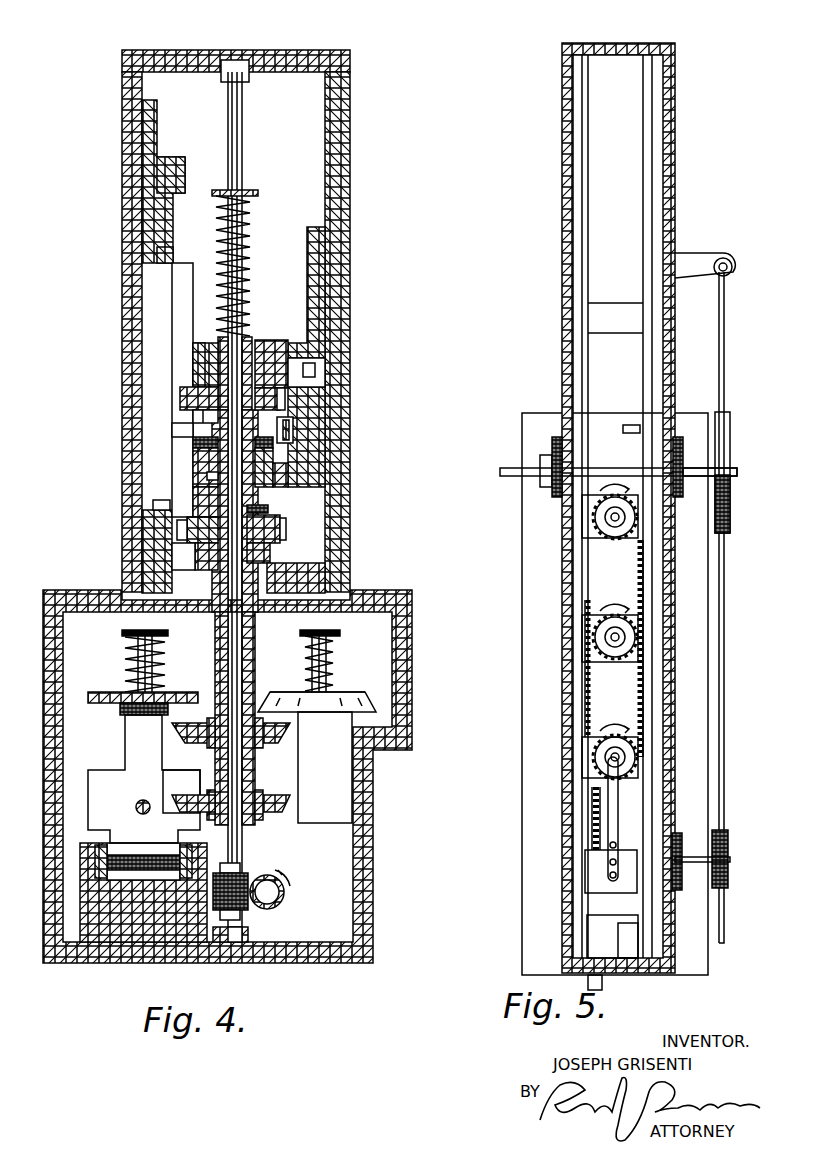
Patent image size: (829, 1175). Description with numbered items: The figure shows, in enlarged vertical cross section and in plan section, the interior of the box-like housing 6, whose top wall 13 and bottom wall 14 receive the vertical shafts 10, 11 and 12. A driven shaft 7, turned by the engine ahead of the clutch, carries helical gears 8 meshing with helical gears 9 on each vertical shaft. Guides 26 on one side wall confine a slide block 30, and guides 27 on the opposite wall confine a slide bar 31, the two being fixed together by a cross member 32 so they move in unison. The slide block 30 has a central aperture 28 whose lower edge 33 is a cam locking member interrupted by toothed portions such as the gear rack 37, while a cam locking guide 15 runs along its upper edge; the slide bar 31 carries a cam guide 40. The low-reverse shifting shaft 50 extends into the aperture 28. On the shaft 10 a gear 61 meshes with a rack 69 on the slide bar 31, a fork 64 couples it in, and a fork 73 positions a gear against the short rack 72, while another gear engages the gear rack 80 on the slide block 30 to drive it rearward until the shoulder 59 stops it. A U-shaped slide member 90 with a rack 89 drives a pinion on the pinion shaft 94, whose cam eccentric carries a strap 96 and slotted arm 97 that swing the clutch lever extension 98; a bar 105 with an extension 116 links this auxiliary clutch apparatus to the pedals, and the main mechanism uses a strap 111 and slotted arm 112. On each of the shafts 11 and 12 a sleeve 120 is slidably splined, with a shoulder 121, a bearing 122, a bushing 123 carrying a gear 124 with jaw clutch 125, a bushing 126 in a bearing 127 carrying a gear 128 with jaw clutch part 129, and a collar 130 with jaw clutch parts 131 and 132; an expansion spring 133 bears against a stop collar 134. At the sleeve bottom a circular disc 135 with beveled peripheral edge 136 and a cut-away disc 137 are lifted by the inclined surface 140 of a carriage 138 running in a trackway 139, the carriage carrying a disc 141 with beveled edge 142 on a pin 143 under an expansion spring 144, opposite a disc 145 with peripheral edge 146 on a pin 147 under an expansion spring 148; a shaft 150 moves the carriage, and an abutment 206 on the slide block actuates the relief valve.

In FIG. 4, the housing 6 is at (350, 188).
In FIG. 5, the housing 6 is at (617, 45).
In FIG. 4, the driven shaft 7 is at (285, 897).
In FIG. 5, the driven shaft 7 is at (590, 984).
In FIG. 4, the helical gear 8 is at (275, 903).
In FIG. 4, the helical gear 9 is at (243, 873).
In FIG. 5, the shaft 10 is at (600, 757).
In FIG. 4, the shaft 11 is at (243, 112).
In FIG. 5, the shaft 11 is at (600, 634).
In FIG. 5, the shaft 12 is at (600, 518).
In FIG. 4, the top wall 13 is at (262, 55).
In FIG. 4, the bottom wall 14 is at (335, 963).
In FIG. 4, the cam locking guide 15 is at (165, 265).
In FIG. 4, the guide 26 is at (168, 175).
In FIG. 4, the guide 27 is at (320, 350).
In FIG. 4, the central aperture 28 is at (163, 349).
In FIG. 4, the slide block 30 is at (148, 208).
In FIG. 4, the slide bar 31 is at (282, 400).
In FIG. 5, the cross member 32 is at (605, 313).
In FIG. 4, the lower edge 33 is at (153, 505).
In FIG. 4, the gear rack 37 is at (165, 503).
In FIG. 4, the cam guide 40 is at (305, 370).
In FIG. 5, the low-reverse shifting shaft 50 is at (600, 468).
In FIG. 5, the shoulder 59 is at (630, 965).
In FIG. 5, the gear 61 is at (630, 745).
In FIG. 5, the fork 64 is at (618, 815).
In FIG. 4, the rack 69 is at (286, 397).
In FIG. 5, the rack 69 is at (590, 692).
In FIG. 4, the rack 72 is at (293, 425).
In FIG. 5, the fork 73 is at (622, 879).
In FIG. 4, the gear rack 80 is at (186, 530).
In FIG. 5, the gear rack 80 is at (643, 690).
In FIG. 5, the rack 89 is at (592, 812).
In FIG. 5, the slide member 90 is at (608, 915).
In FIG. 5, the pinion shaft 94 is at (590, 858).
In FIG. 5, the strap 96 is at (733, 841).
In FIG. 5, the slotted arm 97 is at (732, 860).
In FIG. 5, the clutch lever extension 98 is at (727, 318).
In FIG. 5, the bar 105 is at (610, 878).
In FIG. 5, the strap 111 is at (730, 430).
In FIG. 5, the slotted arm 112 is at (737, 470).
In FIG. 5, the extension 116 is at (616, 843).
In FIG. 4, the sleeve 120 is at (255, 663).
In FIG. 4, the shoulder 121 is at (200, 348).
In FIG. 4, the bearing 122 is at (264, 352).
In FIG. 5, the bearing 122 is at (590, 527).
In FIG. 4, the bushing 123 is at (195, 362).
In FIG. 4, the gear 124 is at (182, 400).
In FIG. 5, the gear 124 is at (640, 522).
In FIG. 4, the jaw clutch 125 is at (196, 418).
In FIG. 4, the bushing 126 is at (272, 549).
In FIG. 4, the bearing 127 is at (280, 574).
In FIG. 4, the gear 128 is at (286, 528).
In FIG. 4, the jaw clutch part 129 is at (270, 510).
In FIG. 4, the collar 130 is at (197, 467).
In FIG. 4, the jaw clutch part 131 is at (195, 441).
In FIG. 4, the jaw clutch part 132 is at (275, 500).
In FIG. 4, the expansion spring 133 is at (250, 286).
In FIG. 4, the stop collar 134 is at (250, 190).
In FIG. 4, the circular disc 135 is at (268, 797).
In FIG. 4, the beveled peripheral edge 136 is at (283, 812).
In FIG. 4, the disc 137 is at (288, 727).
In FIG. 4, the carriage 138 is at (285, 740).
In FIG. 4, the trackway 139 is at (128, 945).
In FIG. 4, the inclined surface 140 is at (175, 783).
In FIG. 4, the disc 141 is at (118, 692).
In FIG. 4, the beveled edge 142 is at (118, 706).
In FIG. 4, the pin 143 is at (140, 650).
In FIG. 4, the expansion spring 144 is at (163, 648).
In FIG. 5, the expansion spring 144 is at (724, 258).
In FIG. 4, the disc 145 is at (356, 695).
In FIG. 4, the peripheral edge 146 is at (378, 708).
In FIG. 4, the pin 147 is at (336, 651).
In FIG. 4, the expansion spring 148 is at (308, 651).
In FIG. 4, the shaft 150 is at (143, 815).
In FIG. 5, the abutment 206 is at (627, 425).